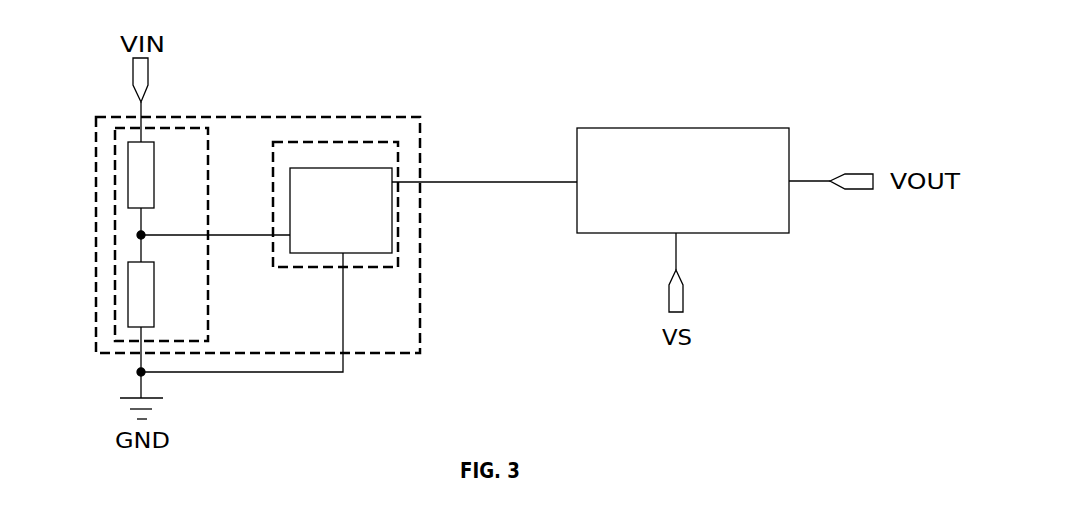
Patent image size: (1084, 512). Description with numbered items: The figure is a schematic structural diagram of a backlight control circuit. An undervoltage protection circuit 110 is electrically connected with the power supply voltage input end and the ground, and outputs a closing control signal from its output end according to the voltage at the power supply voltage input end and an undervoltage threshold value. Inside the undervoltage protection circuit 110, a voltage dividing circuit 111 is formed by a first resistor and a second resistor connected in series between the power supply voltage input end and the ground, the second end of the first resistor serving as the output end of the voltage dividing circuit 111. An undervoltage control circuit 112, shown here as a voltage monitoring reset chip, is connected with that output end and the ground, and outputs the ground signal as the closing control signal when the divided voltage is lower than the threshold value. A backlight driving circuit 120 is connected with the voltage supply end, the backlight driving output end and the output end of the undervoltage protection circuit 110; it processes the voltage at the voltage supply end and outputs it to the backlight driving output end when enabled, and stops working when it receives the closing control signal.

The undervoltage protection circuit 110 is at (300, 117).
The voltage dividing circuit 111 is at (113, 167).
The undervoltage control circuit 112 is at (372, 142).
The backlight driving circuit 120 is at (670, 128).